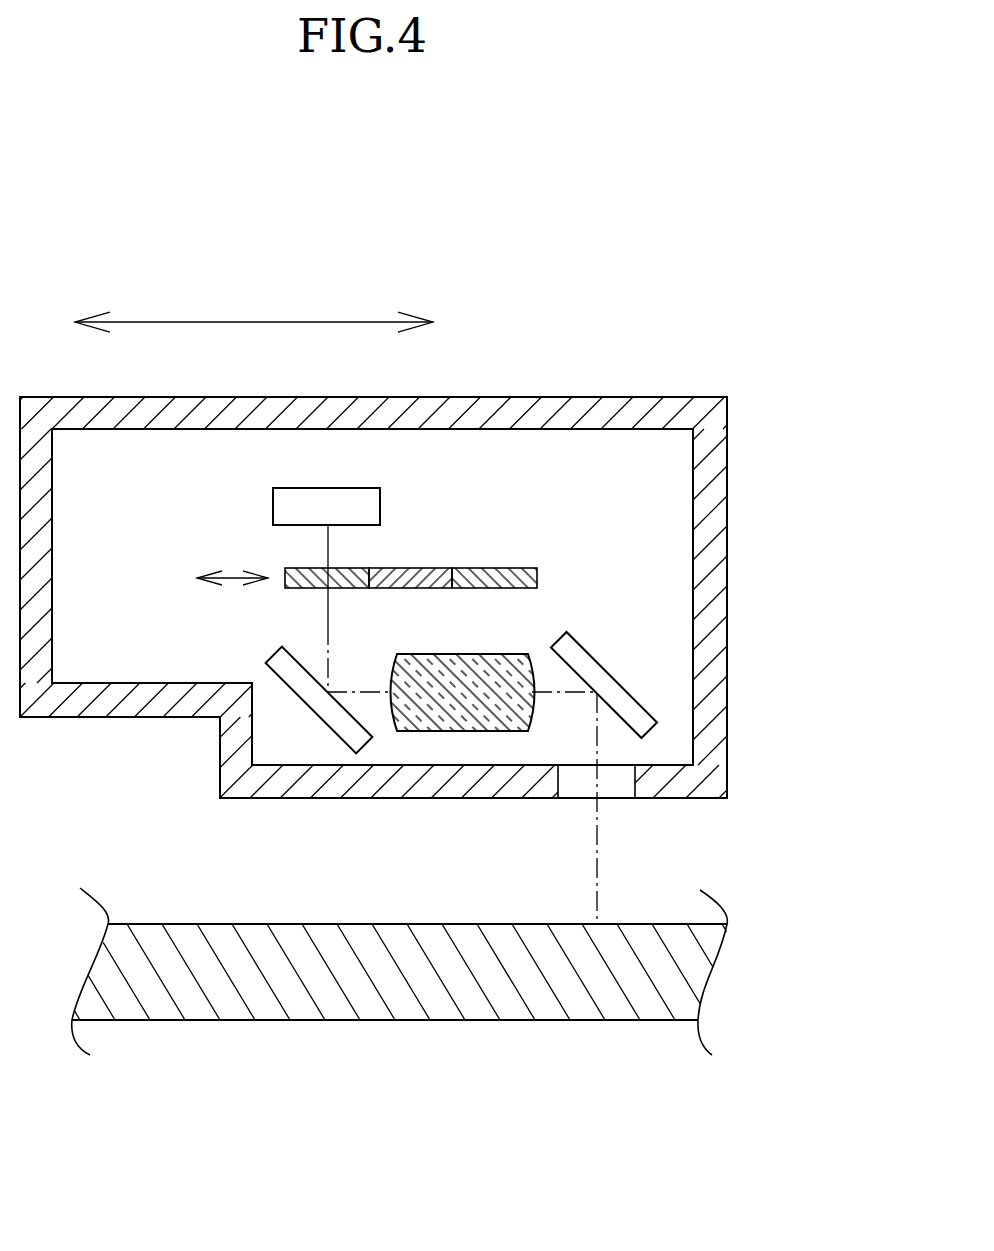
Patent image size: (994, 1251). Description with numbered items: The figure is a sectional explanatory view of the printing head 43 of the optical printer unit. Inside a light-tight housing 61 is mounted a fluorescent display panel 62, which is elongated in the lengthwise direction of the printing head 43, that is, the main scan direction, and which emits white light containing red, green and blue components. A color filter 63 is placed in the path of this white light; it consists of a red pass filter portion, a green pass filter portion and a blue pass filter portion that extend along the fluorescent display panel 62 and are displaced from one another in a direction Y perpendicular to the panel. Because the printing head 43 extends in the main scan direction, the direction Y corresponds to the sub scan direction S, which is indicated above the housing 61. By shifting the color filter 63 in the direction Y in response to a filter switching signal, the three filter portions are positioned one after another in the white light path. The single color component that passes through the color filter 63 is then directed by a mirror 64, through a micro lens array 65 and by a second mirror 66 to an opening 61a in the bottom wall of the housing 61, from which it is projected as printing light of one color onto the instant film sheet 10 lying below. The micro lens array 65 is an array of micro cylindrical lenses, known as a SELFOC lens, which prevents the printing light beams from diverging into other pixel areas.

The instant film sheet 10 is at (420, 999).
The printing head 43 is at (620, 397).
The light-tight housing 61 is at (473, 416).
The opening 61a is at (632, 778).
The fluorescent display panel 62 is at (355, 488).
The color filter 63 is at (537, 573).
The mirror 64 is at (292, 692).
The micro lens array 65 is at (470, 703).
The mirror 66 is at (606, 668).
The sub scan direction S is at (253, 322).
The perpendicular direction Y is at (238, 572).